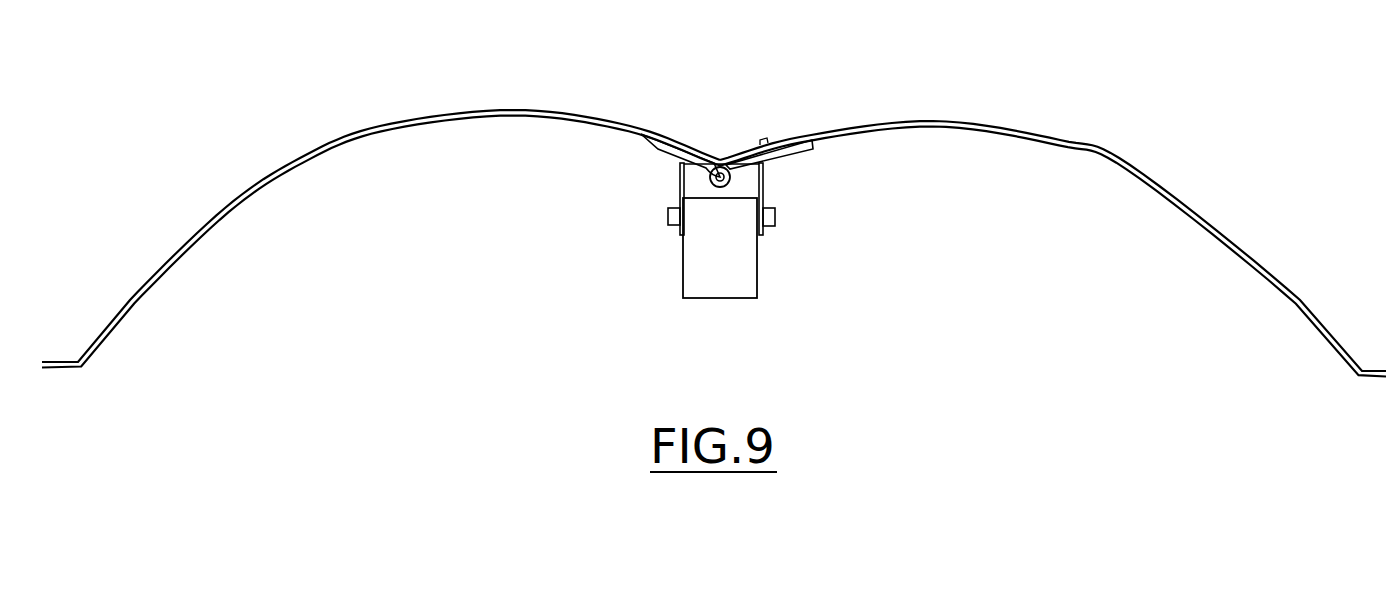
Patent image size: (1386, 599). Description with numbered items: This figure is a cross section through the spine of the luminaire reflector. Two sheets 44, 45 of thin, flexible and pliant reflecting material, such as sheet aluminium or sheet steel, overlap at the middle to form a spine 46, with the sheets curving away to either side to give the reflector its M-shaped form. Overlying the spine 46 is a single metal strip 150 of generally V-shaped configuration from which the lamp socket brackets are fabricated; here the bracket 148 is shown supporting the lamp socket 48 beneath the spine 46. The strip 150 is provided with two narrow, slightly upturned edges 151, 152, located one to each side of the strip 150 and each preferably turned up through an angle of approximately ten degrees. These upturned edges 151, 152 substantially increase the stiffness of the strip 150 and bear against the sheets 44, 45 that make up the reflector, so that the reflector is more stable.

The sheet 44 is at (321, 151).
The sheet 45 is at (1102, 150).
The spine 46 is at (716, 137).
The lamp socket 48 is at (722, 267).
The bracket 148 is at (677, 200).
The metal strip 150 is at (766, 166).
The upturned edge 151 is at (641, 139).
The upturned edge 152 is at (803, 150).